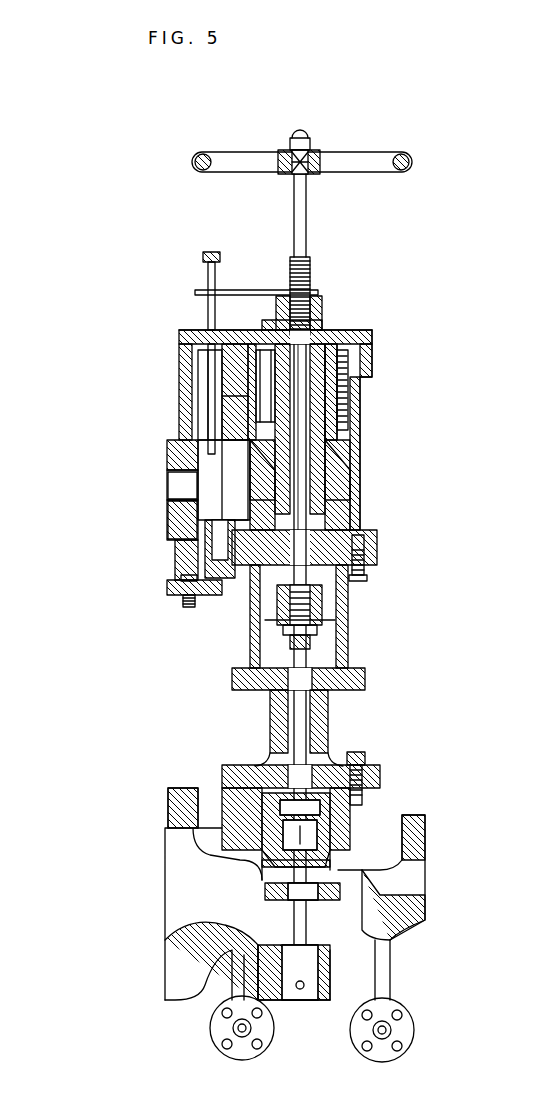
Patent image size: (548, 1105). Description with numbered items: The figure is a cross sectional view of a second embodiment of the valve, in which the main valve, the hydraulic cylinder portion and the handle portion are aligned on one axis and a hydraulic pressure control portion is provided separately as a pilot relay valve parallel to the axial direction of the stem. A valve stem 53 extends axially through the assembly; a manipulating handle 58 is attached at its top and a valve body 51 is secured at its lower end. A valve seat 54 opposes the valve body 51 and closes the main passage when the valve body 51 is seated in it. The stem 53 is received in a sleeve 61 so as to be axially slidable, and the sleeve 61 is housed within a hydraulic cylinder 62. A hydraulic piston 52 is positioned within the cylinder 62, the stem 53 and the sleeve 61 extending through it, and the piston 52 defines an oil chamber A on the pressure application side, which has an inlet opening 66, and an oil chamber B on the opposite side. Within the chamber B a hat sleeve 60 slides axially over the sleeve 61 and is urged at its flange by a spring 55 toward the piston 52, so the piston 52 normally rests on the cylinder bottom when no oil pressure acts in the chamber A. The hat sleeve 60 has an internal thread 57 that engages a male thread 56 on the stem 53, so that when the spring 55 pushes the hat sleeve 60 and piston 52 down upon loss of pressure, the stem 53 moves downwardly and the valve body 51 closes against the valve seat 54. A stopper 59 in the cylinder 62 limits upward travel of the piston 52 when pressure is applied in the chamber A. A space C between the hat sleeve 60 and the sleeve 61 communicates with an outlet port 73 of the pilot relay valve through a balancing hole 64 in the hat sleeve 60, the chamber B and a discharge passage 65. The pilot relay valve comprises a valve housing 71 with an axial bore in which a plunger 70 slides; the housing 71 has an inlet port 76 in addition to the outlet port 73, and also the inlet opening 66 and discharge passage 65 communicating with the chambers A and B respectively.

The valve body 51 is at (262, 832).
The hydraulic piston 52 is at (330, 452).
The valve stem 53 is at (308, 232).
The valve seat 54 is at (265, 885).
The spring 55 is at (362, 352).
The male thread 56 is at (322, 312).
The internal thread 57 is at (283, 325).
The manipulating handle 58 is at (197, 160).
The stopper 59 is at (355, 410).
The hat sleeve 60 is at (352, 398).
The sleeve 61 is at (330, 492).
The hydraulic cylinder 62 is at (360, 432).
The balancing hole 64 is at (192, 325).
The discharge passage 65 is at (222, 452).
The inlet opening 66 is at (248, 580).
The plunger 70 is at (205, 590).
The valve housing 71 is at (168, 522).
The outlet port 73 is at (168, 487).
The inlet port 76 is at (167, 582).
The oil chamber A is at (348, 525).
The oil chamber B is at (215, 362).
The space C is at (240, 400).